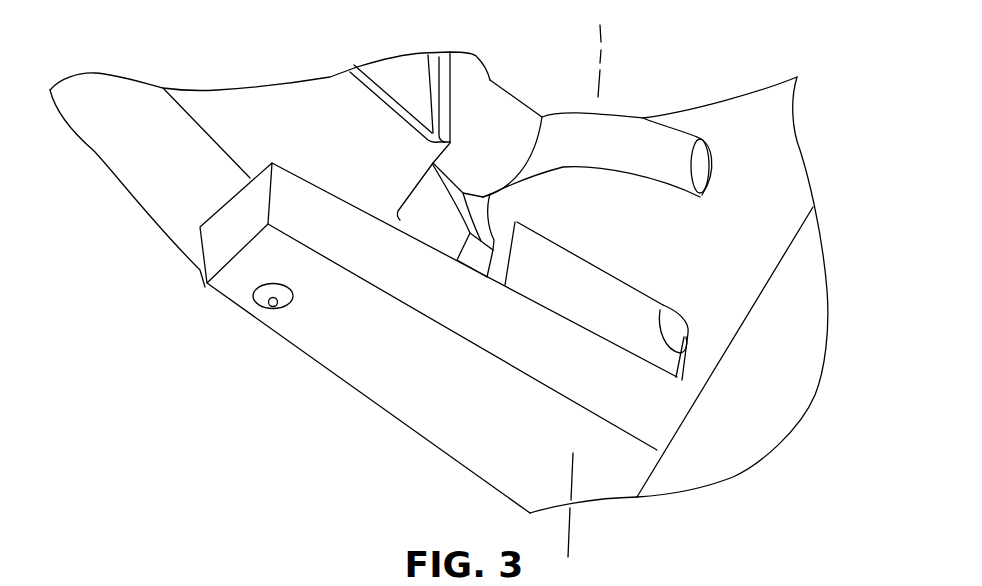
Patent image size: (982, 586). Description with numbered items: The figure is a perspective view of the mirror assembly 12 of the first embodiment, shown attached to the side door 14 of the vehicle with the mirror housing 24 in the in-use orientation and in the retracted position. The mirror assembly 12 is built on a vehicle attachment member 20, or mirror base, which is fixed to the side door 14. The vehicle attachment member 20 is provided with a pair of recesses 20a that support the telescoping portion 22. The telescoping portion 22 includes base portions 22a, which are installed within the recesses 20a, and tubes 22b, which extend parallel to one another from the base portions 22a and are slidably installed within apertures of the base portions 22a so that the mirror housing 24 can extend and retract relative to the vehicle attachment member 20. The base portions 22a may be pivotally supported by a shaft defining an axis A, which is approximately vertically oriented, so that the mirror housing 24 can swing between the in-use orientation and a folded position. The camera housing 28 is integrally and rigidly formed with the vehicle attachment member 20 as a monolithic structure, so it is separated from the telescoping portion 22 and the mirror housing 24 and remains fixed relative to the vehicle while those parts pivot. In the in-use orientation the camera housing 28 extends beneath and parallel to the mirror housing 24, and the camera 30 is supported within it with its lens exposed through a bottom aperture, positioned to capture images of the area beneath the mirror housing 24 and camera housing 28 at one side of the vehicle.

The mirror assembly 12 is at (216, 82).
The side door 14 is at (790, 347).
The vehicle attachment member 20 is at (773, 184).
The recesses 20a is at (700, 146).
The telescoping portion 22 is at (496, 78).
The base portions 22a is at (629, 143).
The tubes 22b is at (506, 129).
The mirror housing 24 is at (293, 107).
The camera housing 28 is at (310, 333).
The camera 30 is at (273, 307).
The axis A is at (601, 33).